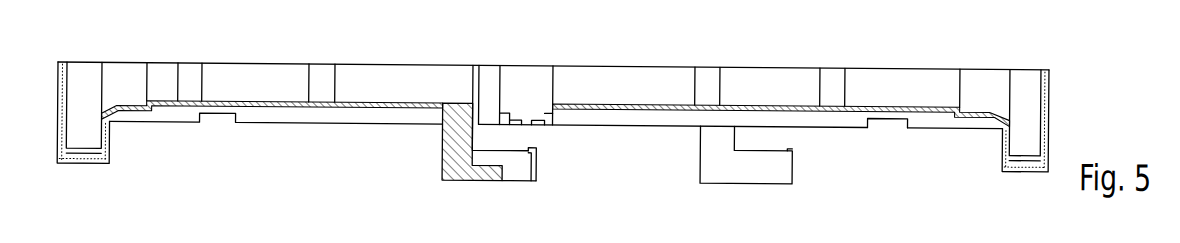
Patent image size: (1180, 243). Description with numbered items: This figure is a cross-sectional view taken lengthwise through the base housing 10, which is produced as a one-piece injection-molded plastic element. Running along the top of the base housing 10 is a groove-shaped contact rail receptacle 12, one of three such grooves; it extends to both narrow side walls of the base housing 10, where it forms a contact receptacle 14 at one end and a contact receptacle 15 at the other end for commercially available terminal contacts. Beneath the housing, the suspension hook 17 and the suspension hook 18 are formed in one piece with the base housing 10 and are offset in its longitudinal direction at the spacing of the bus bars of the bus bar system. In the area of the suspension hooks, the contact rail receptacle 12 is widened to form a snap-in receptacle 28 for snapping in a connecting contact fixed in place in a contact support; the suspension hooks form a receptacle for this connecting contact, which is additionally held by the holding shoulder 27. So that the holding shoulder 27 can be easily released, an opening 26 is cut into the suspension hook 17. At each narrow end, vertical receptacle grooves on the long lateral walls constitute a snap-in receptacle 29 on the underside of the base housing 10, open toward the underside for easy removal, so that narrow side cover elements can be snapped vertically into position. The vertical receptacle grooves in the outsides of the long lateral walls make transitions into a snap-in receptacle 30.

The base housing 10 is at (679, 49).
The contact rail receptacle 12 is at (267, 66).
The contact receptacle 14 is at (80, 115).
The contact receptacle 15 is at (1025, 107).
The suspension hook 17 is at (443, 161).
The suspension hook 18 is at (783, 162).
The opening 26 is at (515, 170).
The holding shoulder 27 is at (540, 148).
The snap-in receptacle 28 is at (532, 70).
The snap-in receptacle 29 is at (82, 150).
The snap-in receptacle 30 is at (890, 118).